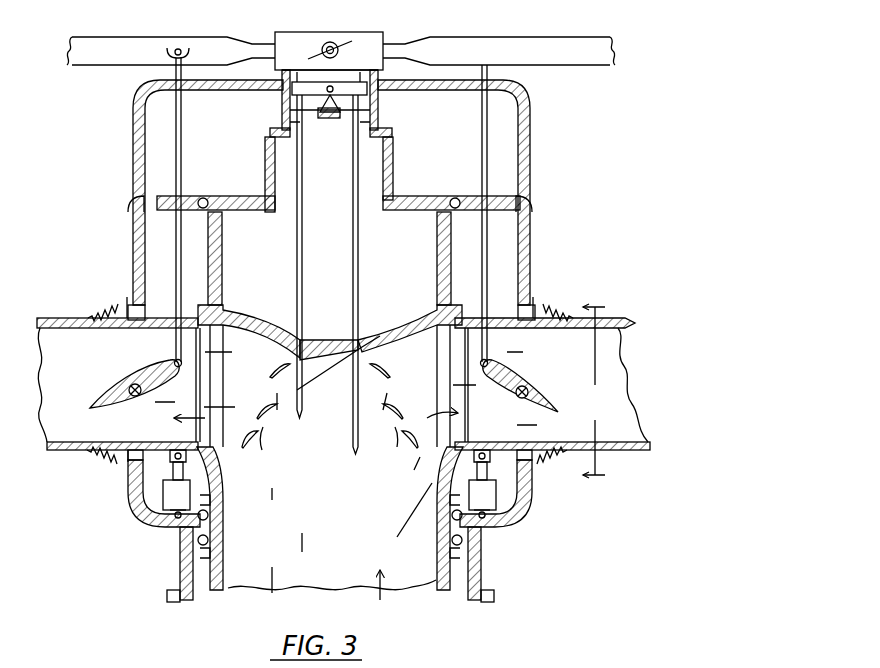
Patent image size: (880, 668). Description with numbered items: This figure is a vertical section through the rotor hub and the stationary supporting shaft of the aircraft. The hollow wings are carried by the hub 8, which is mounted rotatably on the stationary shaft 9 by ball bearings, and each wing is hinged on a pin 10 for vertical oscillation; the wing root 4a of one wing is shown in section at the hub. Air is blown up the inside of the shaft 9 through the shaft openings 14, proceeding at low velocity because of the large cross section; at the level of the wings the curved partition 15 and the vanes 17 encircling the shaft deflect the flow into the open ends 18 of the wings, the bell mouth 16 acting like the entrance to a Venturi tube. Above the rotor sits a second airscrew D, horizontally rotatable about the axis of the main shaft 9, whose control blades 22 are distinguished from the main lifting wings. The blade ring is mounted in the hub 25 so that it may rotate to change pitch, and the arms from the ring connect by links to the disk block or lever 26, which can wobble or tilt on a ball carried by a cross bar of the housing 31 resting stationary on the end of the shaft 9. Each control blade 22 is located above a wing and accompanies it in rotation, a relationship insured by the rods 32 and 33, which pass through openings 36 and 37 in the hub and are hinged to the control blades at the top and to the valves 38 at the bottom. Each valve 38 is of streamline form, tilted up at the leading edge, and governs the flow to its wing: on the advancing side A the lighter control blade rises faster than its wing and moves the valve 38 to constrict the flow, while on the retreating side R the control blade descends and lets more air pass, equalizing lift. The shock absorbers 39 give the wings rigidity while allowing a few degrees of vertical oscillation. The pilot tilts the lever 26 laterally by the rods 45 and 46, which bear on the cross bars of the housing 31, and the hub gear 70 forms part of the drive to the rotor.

The control blades 22 is at (105, 66).
The airscrew D is at (373, 42).
The opening 36 is at (505, 84).
The rod 33 is at (182, 120).
The rod 32 is at (482, 128).
The hub 25 is at (433, 86).
The disk block (lever) 26 is at (283, 95).
The housing 31 is at (268, 150).
The opening 37 is at (478, 190).
The rod 45 is at (297, 262).
The rod 46 is at (358, 252).
The curved partition 15 is at (383, 322).
The bell mouth 16 is at (317, 384).
The shaft openings 14 is at (220, 382).
The open ends of the wings 18 is at (465, 416).
The pin 10 is at (530, 392).
The valve 38 is at (550, 408).
The vanes 17 is at (250, 450).
The hub 8 is at (137, 507).
The pipe wall 4a is at (110, 462).
The shock absorbers 39 is at (487, 497).
The stationary shaft 9 is at (228, 553).
The hub gear 70 is at (494, 598).
The advancing blade A is at (634, 300).
The retreating blade R is at (36, 296).